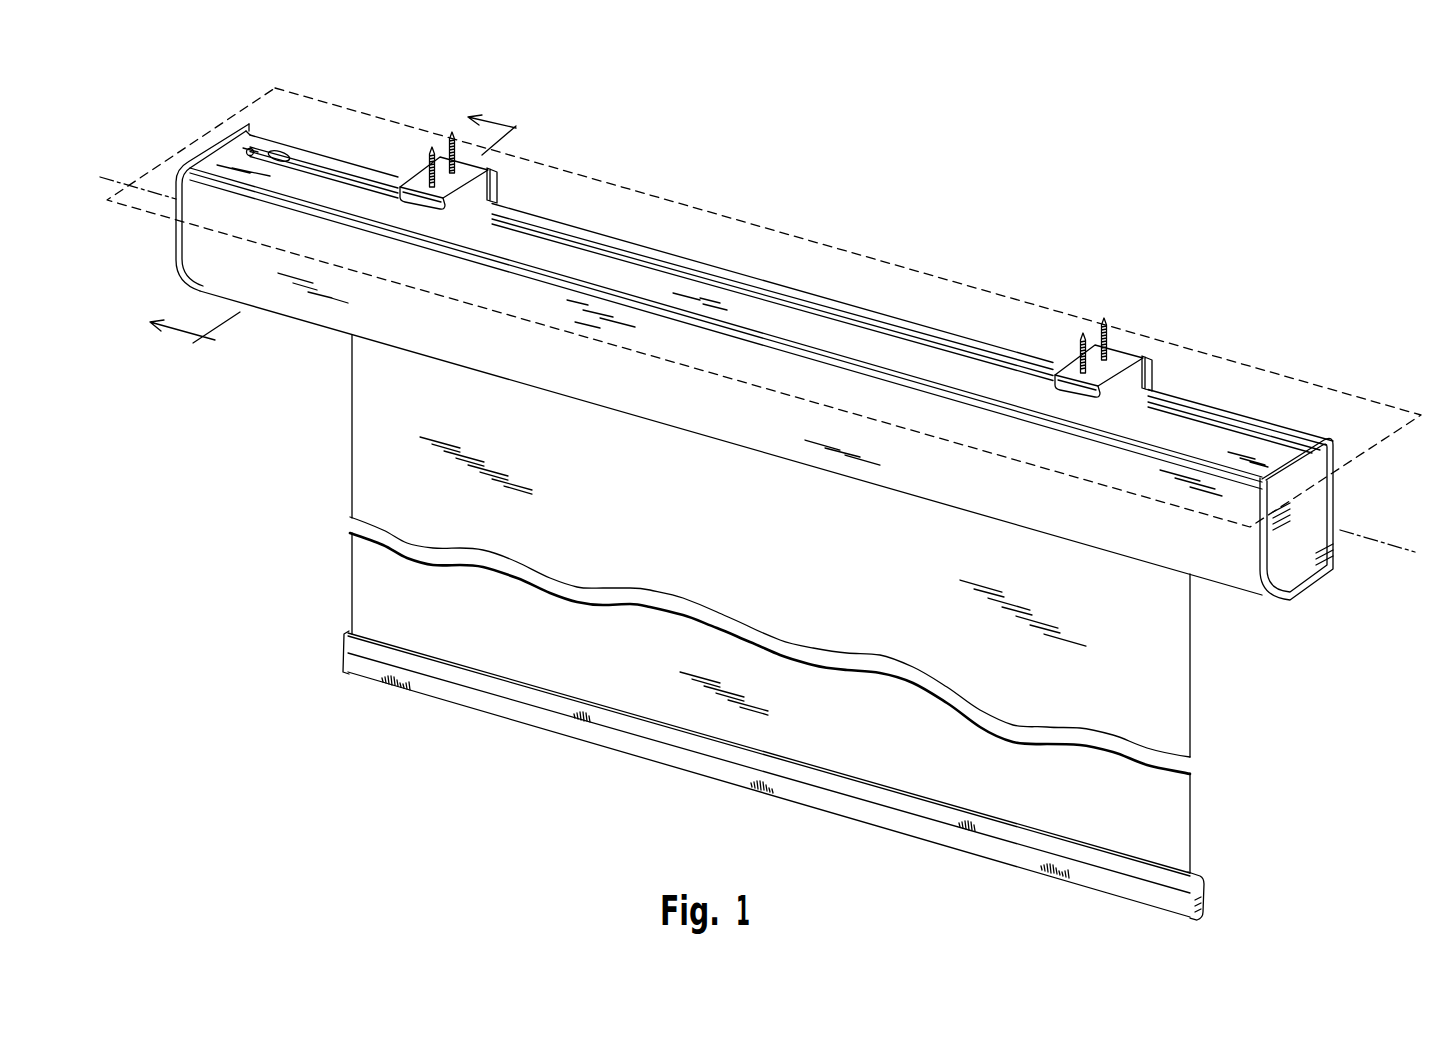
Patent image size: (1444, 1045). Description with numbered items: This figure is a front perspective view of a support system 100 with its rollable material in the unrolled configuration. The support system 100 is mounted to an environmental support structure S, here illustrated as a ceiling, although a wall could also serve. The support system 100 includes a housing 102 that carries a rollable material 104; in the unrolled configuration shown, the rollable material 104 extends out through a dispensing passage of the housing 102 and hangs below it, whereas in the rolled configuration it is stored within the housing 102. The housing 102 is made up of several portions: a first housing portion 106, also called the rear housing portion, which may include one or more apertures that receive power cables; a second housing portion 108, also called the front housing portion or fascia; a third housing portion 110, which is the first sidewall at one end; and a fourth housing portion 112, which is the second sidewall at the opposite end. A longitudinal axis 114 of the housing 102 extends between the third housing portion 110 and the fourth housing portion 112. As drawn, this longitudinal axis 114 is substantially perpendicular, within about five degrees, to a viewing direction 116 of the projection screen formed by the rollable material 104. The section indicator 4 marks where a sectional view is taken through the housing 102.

The support system 100 is at (910, 134).
The housing 102 is at (807, 365).
The rollable material 104 is at (719, 627).
The first housing portion 106 is at (878, 315).
The second housing portion 108 is at (1237, 592).
The third housing portion 110 is at (230, 135).
The fourth housing portion 112 is at (1320, 506).
The longitudinal axis 114 is at (148, 192).
The viewing direction 116 is at (696, 553).
The environmental support structure S is at (676, 199).
The section line 4- 4 is at (327, 221).